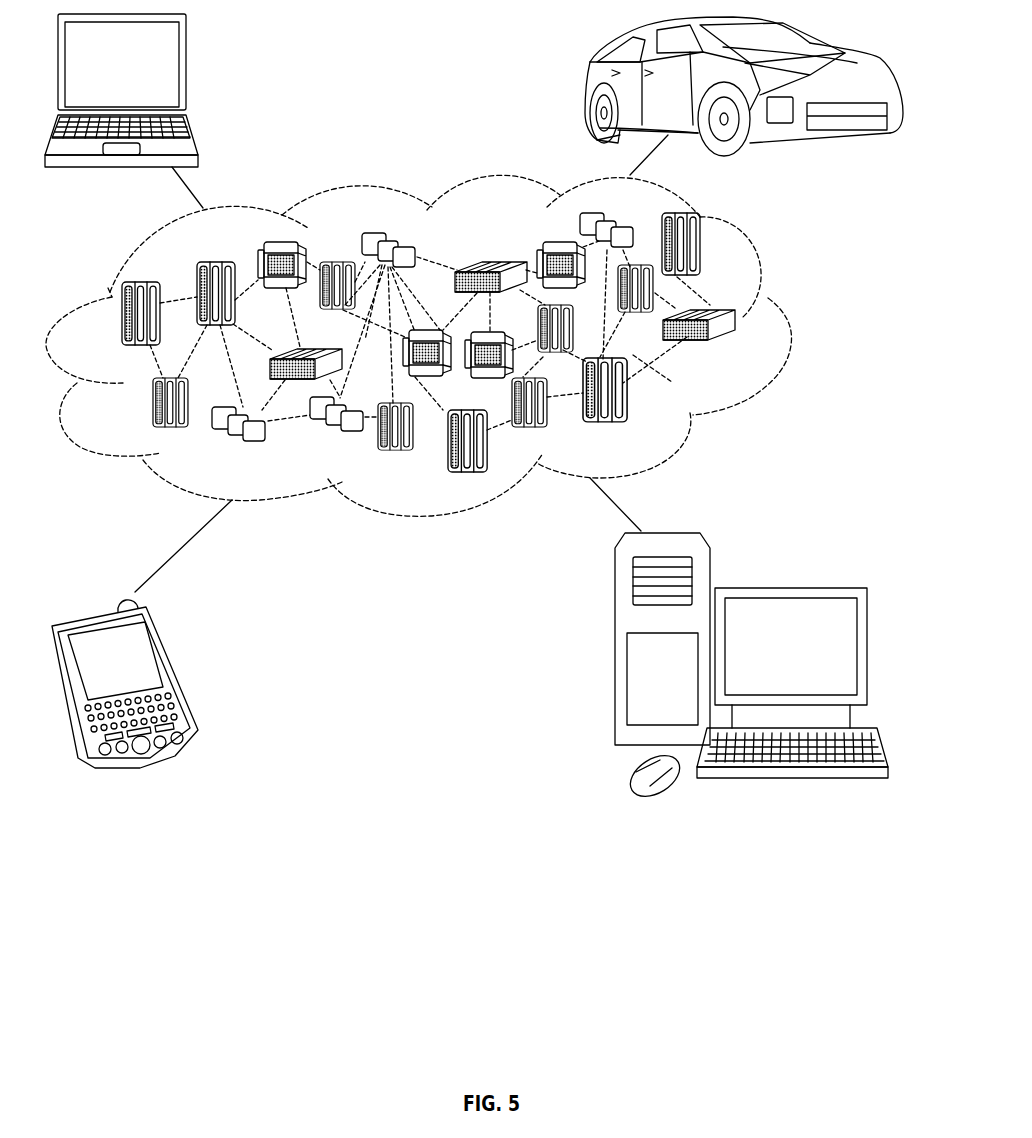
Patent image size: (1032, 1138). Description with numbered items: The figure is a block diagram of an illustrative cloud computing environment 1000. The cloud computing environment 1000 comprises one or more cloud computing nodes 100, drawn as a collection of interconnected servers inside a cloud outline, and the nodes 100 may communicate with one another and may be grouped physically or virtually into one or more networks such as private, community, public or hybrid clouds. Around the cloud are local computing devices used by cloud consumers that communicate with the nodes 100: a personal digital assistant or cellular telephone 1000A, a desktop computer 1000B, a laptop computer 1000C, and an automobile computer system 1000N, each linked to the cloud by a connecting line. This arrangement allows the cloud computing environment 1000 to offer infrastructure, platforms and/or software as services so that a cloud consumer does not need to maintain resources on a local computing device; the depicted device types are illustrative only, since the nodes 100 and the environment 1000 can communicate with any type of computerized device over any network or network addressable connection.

The laptop computer 1000C is at (184, 71).
The automobile computer system 1000N is at (586, 92).
The personal digital assistant (PDA) or cellular telephone 1000A is at (178, 673).
The desktop computer 1000B is at (790, 588).
The cloud computing environment 1000 is at (454, 345).
The cloud computing nodes 100 is at (737, 349).